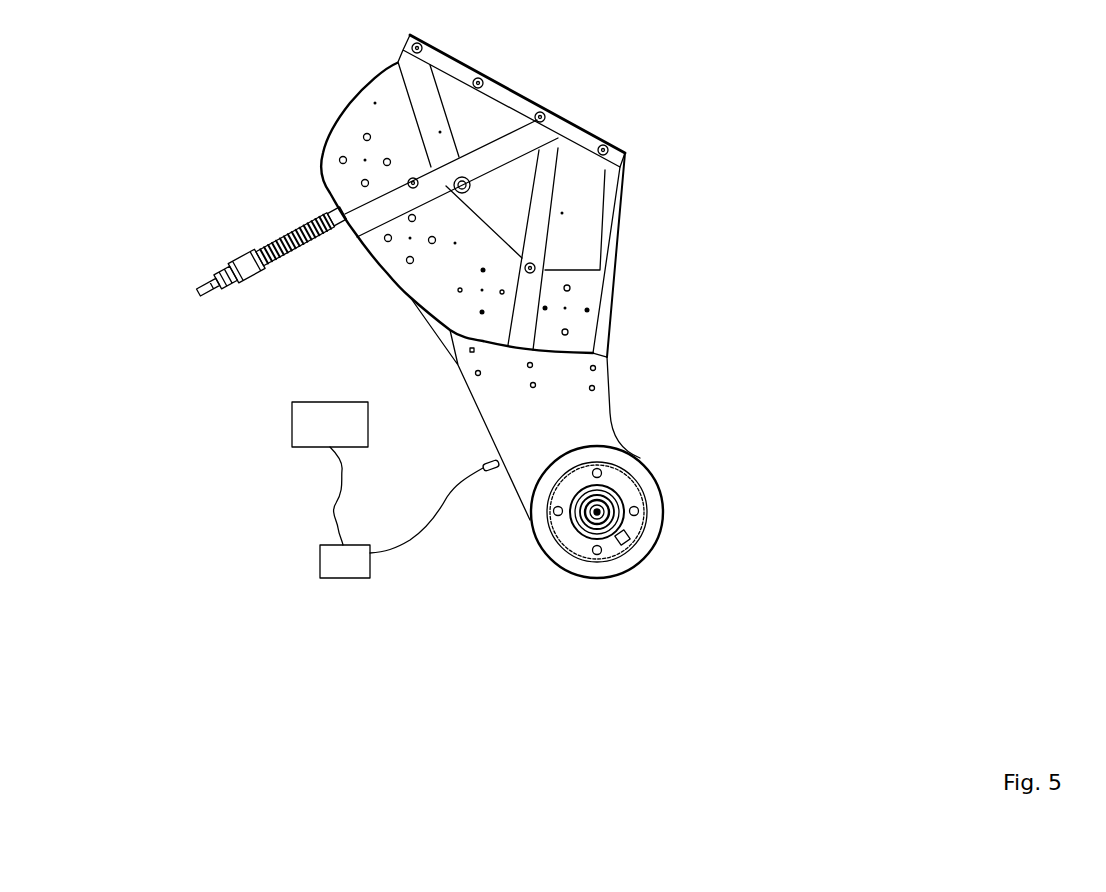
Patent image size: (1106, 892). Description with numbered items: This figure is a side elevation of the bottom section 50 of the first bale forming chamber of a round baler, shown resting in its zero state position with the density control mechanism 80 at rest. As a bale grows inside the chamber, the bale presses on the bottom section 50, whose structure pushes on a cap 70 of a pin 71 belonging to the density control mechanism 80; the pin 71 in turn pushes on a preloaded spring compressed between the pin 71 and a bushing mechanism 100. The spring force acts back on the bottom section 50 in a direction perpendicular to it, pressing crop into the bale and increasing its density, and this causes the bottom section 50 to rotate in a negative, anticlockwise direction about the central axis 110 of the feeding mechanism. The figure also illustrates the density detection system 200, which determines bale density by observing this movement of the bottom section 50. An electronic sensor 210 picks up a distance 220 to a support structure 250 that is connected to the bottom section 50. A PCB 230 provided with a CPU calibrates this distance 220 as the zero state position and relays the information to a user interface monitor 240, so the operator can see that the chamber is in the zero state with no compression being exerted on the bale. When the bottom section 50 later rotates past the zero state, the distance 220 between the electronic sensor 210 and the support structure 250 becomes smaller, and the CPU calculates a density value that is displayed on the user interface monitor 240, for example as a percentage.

The bottom section 50 is at (593, 237).
The cap 70 is at (211, 290).
The pin 71 is at (330, 207).
The density control mechanism 80 is at (290, 227).
The bushing mechanism 100 is at (238, 252).
The central axis 110 is at (597, 513).
The density detection system 200 is at (325, 507).
The electronic sensor 210 is at (483, 465).
The distance 220 is at (502, 463).
The PCB 230 is at (318, 578).
The user interface monitor 240 is at (295, 425).
The support structure 250 is at (595, 425).